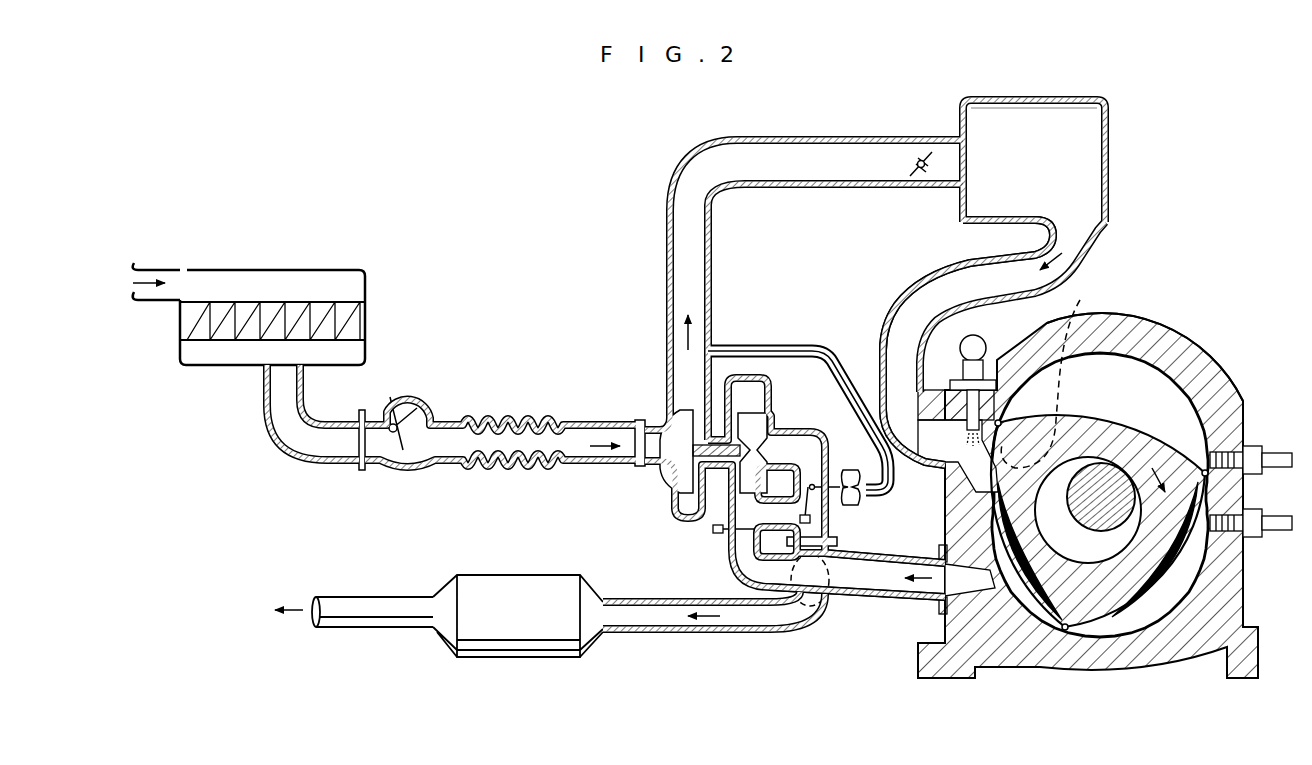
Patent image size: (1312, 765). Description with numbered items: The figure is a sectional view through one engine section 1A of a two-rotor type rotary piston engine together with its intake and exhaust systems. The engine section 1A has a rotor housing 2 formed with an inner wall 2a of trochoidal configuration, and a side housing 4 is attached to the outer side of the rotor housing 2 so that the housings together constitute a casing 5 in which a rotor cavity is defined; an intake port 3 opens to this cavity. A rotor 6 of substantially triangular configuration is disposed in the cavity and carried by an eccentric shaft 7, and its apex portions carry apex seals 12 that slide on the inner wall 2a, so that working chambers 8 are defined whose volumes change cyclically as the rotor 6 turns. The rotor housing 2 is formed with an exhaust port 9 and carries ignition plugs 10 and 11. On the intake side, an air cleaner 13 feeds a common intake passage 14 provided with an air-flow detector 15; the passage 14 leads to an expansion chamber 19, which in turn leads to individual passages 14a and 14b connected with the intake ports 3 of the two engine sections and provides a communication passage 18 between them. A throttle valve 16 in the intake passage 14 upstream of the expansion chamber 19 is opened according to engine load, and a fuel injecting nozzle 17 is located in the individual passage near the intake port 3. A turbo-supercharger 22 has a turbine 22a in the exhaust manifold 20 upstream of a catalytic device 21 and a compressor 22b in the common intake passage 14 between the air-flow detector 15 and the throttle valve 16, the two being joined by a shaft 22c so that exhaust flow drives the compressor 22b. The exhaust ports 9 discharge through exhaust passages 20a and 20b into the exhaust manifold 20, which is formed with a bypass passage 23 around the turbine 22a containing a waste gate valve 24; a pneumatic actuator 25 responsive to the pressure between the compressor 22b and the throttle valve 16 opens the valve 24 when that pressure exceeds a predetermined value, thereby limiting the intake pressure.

The engine section 1A is at (1222, 292).
The rotor housing 2 is at (1140, 333).
The inner wall 2a is at (1143, 372).
The intake port 3 is at (1080, 300).
The side housing 4 is at (952, 385).
The casing 5 is at (1118, 312).
The rotor 6 is at (1110, 598).
The eccentric shaft 7 is at (1090, 530).
The working chamber 8 is at (1113, 404).
The exhaust port 9 is at (980, 590).
The ignition plug 10 is at (1266, 531).
The ignition plug 11 is at (1268, 453).
The apex seal 12 is at (1206, 468).
The air cleaner 13 is at (180, 330).
The common intake passage 14 is at (283, 405).
The individual passage 14a is at (920, 307).
The individual passage 14b is at (968, 342).
The air-flow detector 15 is at (408, 392).
The throttle valve 16 is at (927, 147).
The fuel injecting nozzle 17 is at (980, 342).
The communication passage 18 is at (1087, 181).
The expansion chamber 19 is at (1053, 100).
The exhaust manifold 20 is at (643, 612).
The exhaust passage 20a is at (885, 580).
The exhaust passage 20b is at (857, 592).
The catalytic device 21 is at (527, 578).
The turbo-supercharger 22 is at (670, 508).
The turbine 22a is at (760, 445).
The compressor 22b is at (680, 472).
The shaft 22c is at (716, 480).
The bypass passage 23 is at (787, 522).
The waste gate valve 24 is at (800, 522).
The pneumatic actuator 25 is at (862, 500).